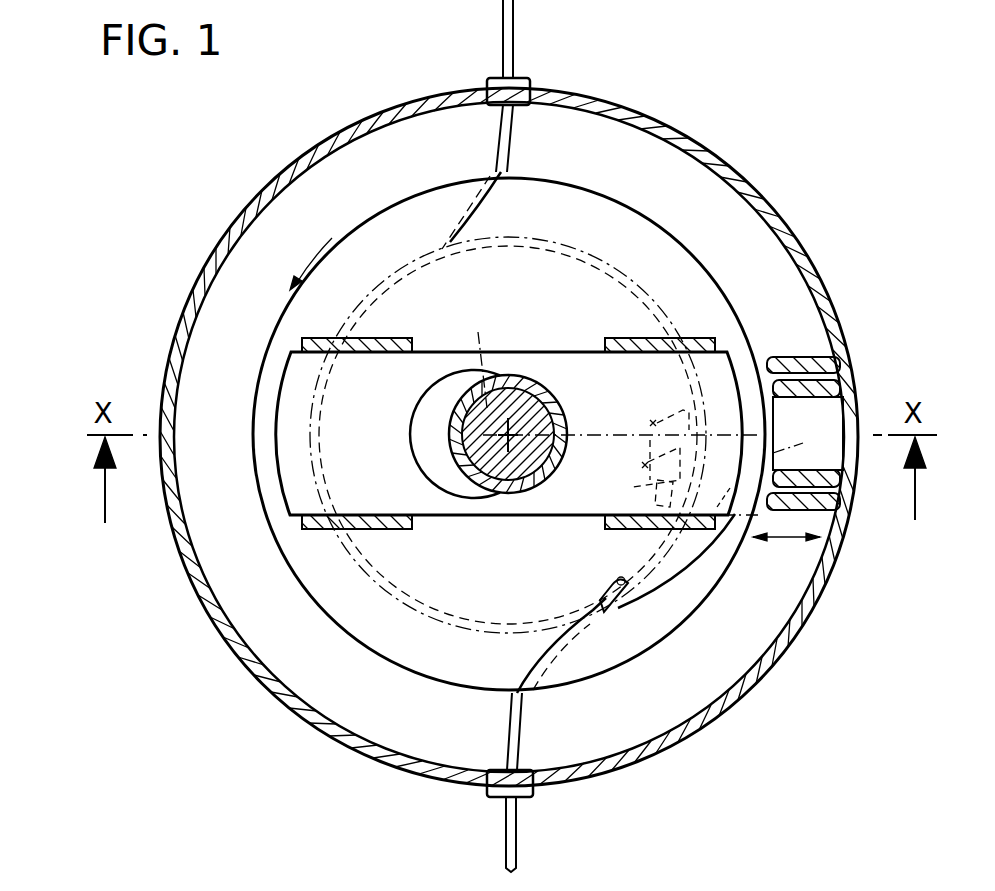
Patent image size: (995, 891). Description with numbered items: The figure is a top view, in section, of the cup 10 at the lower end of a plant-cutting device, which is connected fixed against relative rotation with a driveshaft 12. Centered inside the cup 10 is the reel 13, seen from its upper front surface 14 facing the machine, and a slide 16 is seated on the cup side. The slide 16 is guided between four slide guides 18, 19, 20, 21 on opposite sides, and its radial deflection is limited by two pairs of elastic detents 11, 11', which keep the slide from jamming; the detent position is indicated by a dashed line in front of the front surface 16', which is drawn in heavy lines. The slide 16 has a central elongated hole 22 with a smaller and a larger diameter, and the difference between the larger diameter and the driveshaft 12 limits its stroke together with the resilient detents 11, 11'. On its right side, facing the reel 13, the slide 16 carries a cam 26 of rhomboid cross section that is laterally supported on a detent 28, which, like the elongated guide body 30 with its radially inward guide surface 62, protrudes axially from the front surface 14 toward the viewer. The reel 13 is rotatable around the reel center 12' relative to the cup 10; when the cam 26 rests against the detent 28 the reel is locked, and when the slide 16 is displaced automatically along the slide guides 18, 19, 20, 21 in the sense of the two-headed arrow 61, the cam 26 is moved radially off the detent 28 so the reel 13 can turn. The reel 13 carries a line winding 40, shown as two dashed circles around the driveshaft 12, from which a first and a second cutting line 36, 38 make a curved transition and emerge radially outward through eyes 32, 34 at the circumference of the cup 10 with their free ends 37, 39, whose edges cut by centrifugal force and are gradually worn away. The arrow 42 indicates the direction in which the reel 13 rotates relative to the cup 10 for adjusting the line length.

The cup 10 is at (210, 262).
The elastic detent 11 is at (835, 440).
The elastic detent 11' is at (869, 365).
The driveshaft 12 is at (508, 398).
The reel center 12' is at (472, 355).
The reel 13 is at (322, 616).
The upper front surface 14 is at (437, 665).
The slide 16 is at (518, 469).
The front surface 16' is at (791, 436).
The slide guide 18 is at (685, 348).
The slide guide 19 is at (315, 340).
The slide guide 20 is at (382, 532).
The slide guide 21 is at (636, 528).
The central elongated hole 22 is at (412, 437).
The cam 26 is at (650, 416).
The detent 28 is at (643, 464).
The guide body 30 is at (677, 562).
The eye 32 is at (490, 80).
The eye 34 is at (495, 800).
The first cutting line 36 is at (511, 150).
The free end 37 is at (514, 28).
The second cutting line 38 is at (518, 730).
The free end 39 is at (518, 838).
The line winding 40 is at (580, 246).
The arrow 42 is at (330, 236).
The two-headed arrow 61 is at (787, 540).
The guide surface 62 is at (633, 602).